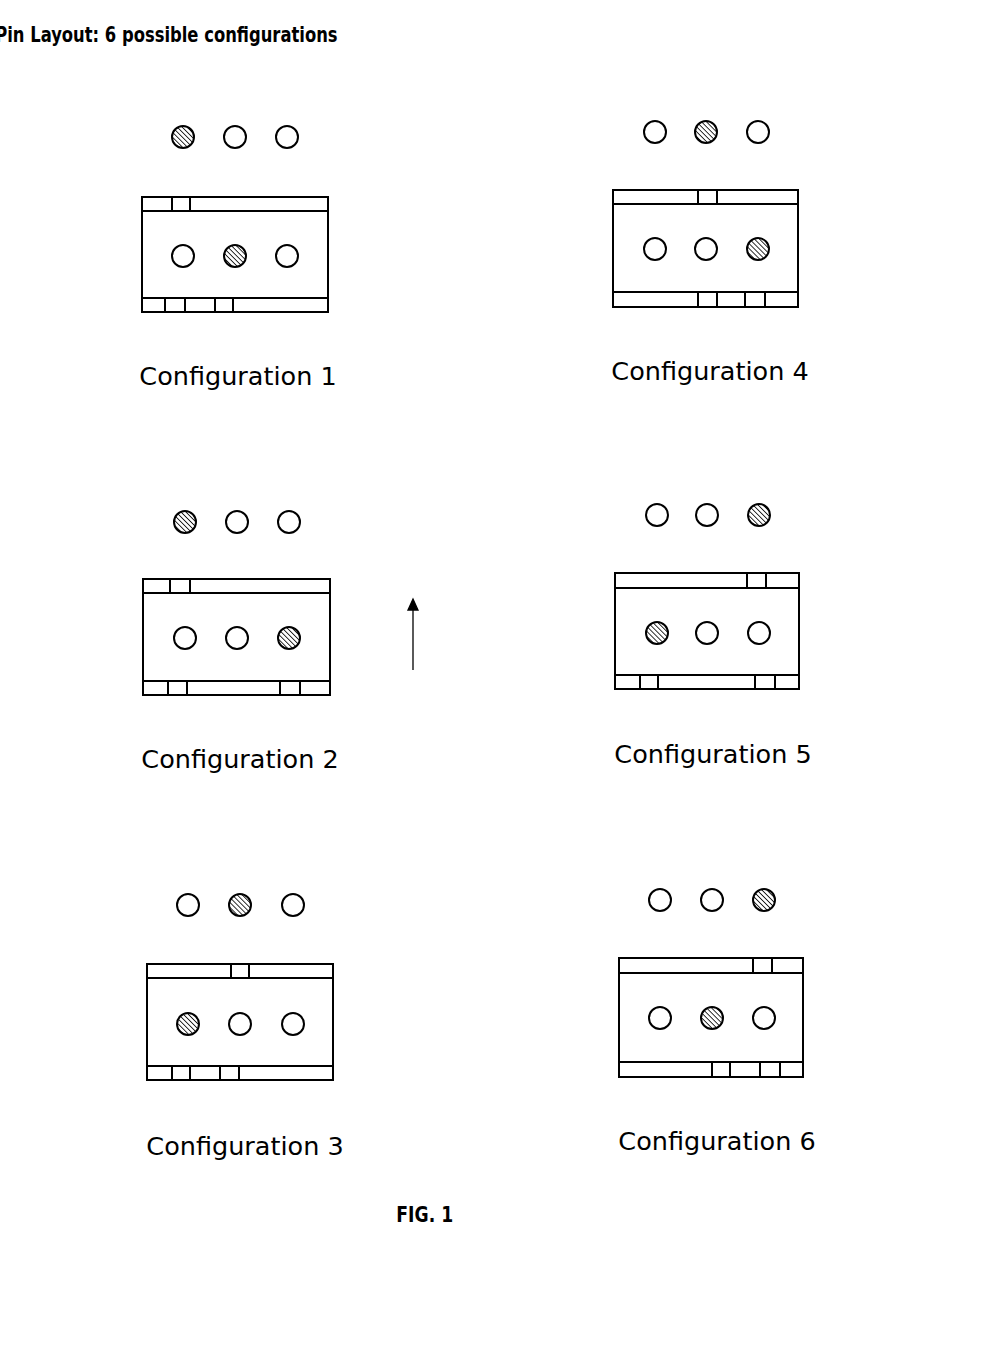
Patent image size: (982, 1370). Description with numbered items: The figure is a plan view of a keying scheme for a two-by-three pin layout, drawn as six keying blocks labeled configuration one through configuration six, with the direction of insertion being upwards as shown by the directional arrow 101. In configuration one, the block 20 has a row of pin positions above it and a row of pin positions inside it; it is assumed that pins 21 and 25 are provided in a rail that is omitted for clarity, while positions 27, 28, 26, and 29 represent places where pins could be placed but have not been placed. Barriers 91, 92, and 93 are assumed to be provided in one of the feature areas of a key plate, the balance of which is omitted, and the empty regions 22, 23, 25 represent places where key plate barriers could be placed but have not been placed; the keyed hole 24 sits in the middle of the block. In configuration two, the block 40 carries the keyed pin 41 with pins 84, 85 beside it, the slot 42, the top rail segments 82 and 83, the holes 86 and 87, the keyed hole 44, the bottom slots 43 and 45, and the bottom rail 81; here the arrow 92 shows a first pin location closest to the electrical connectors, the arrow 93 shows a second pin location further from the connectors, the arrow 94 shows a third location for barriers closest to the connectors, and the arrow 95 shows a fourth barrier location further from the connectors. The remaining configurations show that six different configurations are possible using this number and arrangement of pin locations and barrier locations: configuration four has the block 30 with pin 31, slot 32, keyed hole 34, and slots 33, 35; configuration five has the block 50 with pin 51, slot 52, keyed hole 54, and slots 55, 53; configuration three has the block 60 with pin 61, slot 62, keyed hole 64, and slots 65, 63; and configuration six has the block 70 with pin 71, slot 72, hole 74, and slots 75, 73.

The keying block (configuration 1) 20 is at (328, 234).
The pin 21 is at (183, 126).
The position 27 is at (235, 126).
The position 28 is at (287, 126).
The empty region 22 is at (172, 203).
The barrier 93 is at (218, 210).
The keyed hole 24 is at (235, 245).
The barrier 92 is at (290, 208).
The position 26 is at (172, 256).
The position 29 is at (298, 256).
The empty region 23 is at (170, 315).
The pin 25 is at (225, 305).
The barrier 91 is at (315, 313).
The keying block (configuration 4) 30 is at (798, 225).
The keyed pin 31 is at (706, 120).
The top key slot 32 is at (706, 196).
The keyed hole 34 is at (769, 249).
The bottom key slot 33 is at (705, 303).
The bottom key slot 35 is at (755, 300).
The keying block (configuration 2) 40 is at (330, 607).
The keyed pin 41 is at (185, 508).
The pin 84 is at (237, 508).
The pin 85 is at (289, 508).
The top key slot 42 is at (173, 588).
The top rail segment 82 is at (204, 578).
The hole 87 is at (237, 627).
The top rail segment 83 is at (307, 578).
The hole 86 is at (176, 632).
The keyed hole 44 is at (300, 638).
The bottom key slot 43 is at (173, 693).
The bottom key slot 45 is at (290, 690).
The bottom rail 81 is at (318, 695).
The arrow 94 is at (82, 582).
The arrow 95 is at (82, 682).
The directional arrow 101 is at (413, 650).
The keying block (configuration 5) 50 is at (799, 600).
The keyed pin 51 is at (759, 503).
The top key slot 52 is at (753, 582).
The keyed hole 54 is at (646, 633).
The bottom key slot 55 is at (648, 687).
The bottom key slot 53 is at (765, 692).
The keying block (configuration 3) 60 is at (333, 997).
The keyed pin 61 is at (240, 893).
The top key slot 62 is at (240, 968).
The keyed hole 64 is at (177, 1024).
The bottom key slot 65 is at (180, 1078).
The bottom key slot 63 is at (230, 1083).
The keying block (configuration 6) 70 is at (803, 988).
The keyed pin 71 is at (764, 888).
The top key slot 72 is at (757, 967).
The hole 74 is at (649, 1018).
The bottom key slot 75 is at (718, 1077).
The bottom key slot 73 is at (768, 1082).